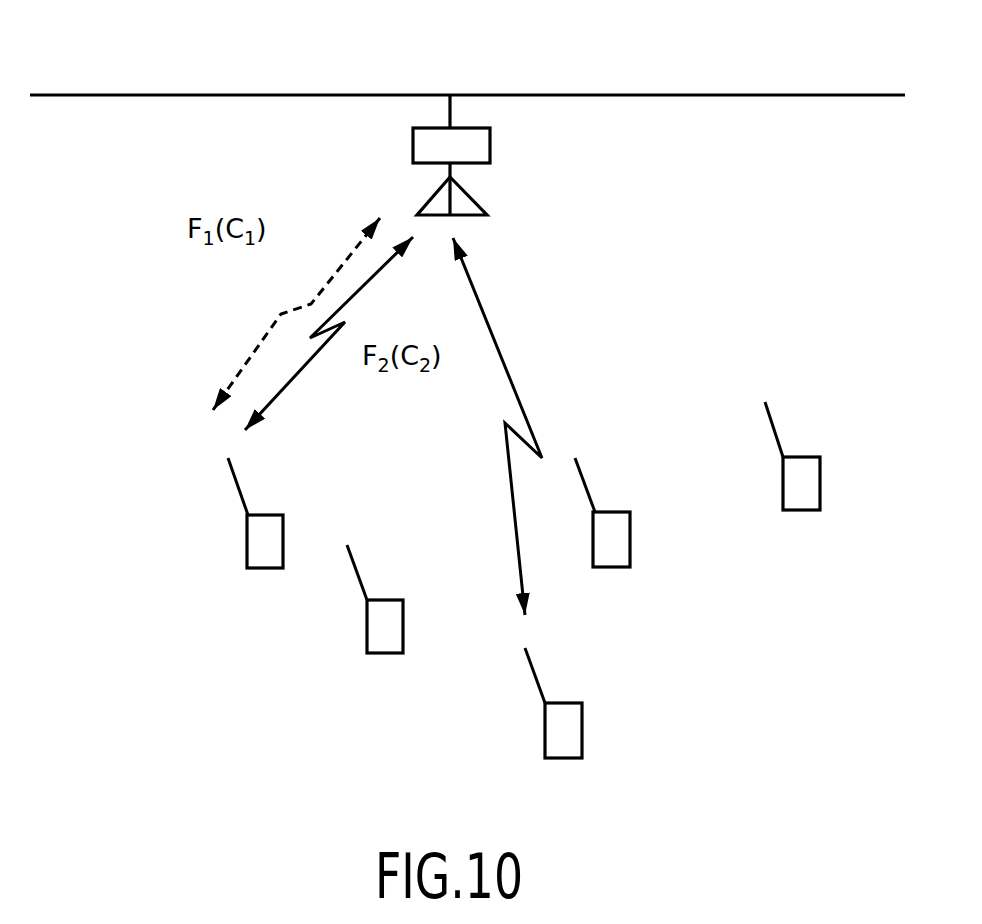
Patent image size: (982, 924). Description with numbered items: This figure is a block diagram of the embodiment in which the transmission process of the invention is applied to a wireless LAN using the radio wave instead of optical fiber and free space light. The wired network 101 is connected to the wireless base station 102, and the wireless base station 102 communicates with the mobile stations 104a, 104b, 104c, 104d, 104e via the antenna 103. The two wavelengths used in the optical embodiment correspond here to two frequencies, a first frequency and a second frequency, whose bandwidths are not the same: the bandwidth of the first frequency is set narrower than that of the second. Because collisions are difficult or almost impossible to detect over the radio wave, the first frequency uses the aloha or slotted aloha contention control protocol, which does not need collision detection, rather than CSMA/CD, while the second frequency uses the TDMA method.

The wired network 101 is at (258, 95).
The wireless base station 102 is at (463, 148).
The antenna 103 is at (453, 198).
The mobile station 104a is at (265, 548).
The mobile station 104b is at (387, 615).
The mobile station 104c is at (563, 720).
The mobile station 104d is at (612, 527).
The mobile station 104e is at (800, 475).